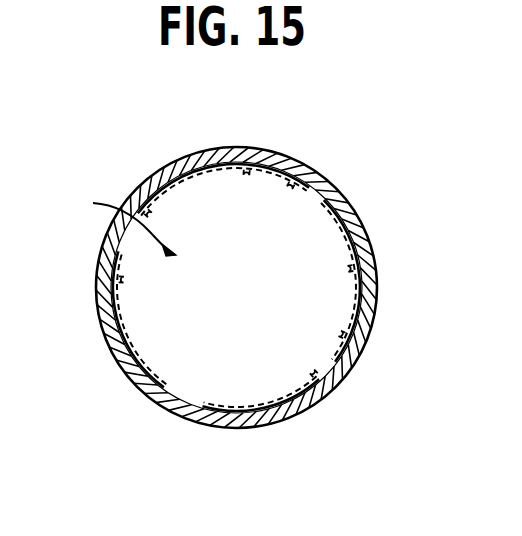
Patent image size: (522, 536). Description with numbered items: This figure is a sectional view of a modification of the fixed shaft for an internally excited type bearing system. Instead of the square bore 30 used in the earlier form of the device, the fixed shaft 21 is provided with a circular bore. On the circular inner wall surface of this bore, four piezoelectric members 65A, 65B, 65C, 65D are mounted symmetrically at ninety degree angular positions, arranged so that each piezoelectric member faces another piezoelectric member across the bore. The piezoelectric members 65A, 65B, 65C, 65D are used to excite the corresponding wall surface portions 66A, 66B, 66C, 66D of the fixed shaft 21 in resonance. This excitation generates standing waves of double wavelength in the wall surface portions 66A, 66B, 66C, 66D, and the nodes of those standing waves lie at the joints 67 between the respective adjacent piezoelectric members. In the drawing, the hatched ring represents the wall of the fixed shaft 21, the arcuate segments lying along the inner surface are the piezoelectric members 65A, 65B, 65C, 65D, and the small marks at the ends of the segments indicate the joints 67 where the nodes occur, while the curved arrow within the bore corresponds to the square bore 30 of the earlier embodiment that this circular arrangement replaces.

The fixed shaft 21 is at (360, 208).
The square bore 30 is at (115, 221).
The piezoelectric member 65A is at (310, 377).
The piezoelectric member 65B is at (356, 282).
The piezoelectric member 65C is at (258, 163).
The piezoelectric member 65D is at (122, 278).
The wall surface portion 66A is at (262, 428).
The wall surface portion 66B is at (373, 244).
The wall surface portion 66C is at (218, 148).
The wall surface portion 66D is at (104, 332).
The joint 67 is at (312, 183).